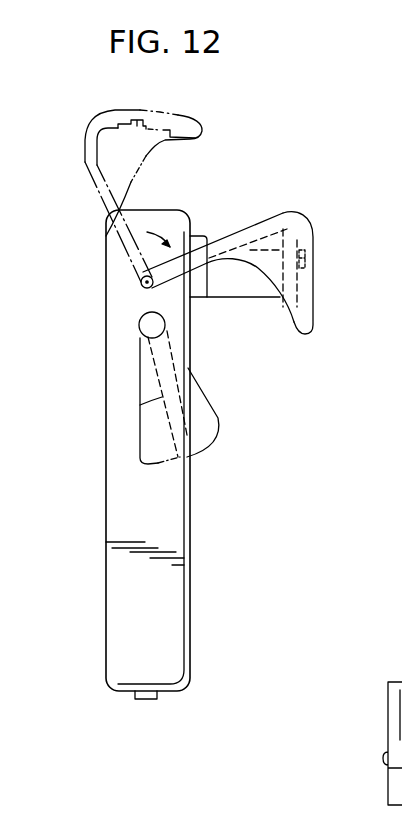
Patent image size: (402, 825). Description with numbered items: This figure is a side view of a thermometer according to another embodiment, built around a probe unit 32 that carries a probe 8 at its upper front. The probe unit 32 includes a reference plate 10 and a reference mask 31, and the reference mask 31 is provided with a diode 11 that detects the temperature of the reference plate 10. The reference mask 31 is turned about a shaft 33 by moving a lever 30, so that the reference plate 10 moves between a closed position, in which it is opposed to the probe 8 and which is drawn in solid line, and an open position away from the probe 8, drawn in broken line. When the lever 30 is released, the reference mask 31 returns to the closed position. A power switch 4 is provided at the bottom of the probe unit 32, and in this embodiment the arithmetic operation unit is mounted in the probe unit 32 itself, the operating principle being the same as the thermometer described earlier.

The power switch 4 is at (150, 700).
The probe 8 is at (248, 297).
The reference plate 10 is at (305, 250).
The diode 11 is at (305, 264).
The lever 30 is at (208, 390).
The reference mask 31 is at (313, 237).
The probe unit 32 is at (190, 635).
The shaft 33 is at (142, 286).